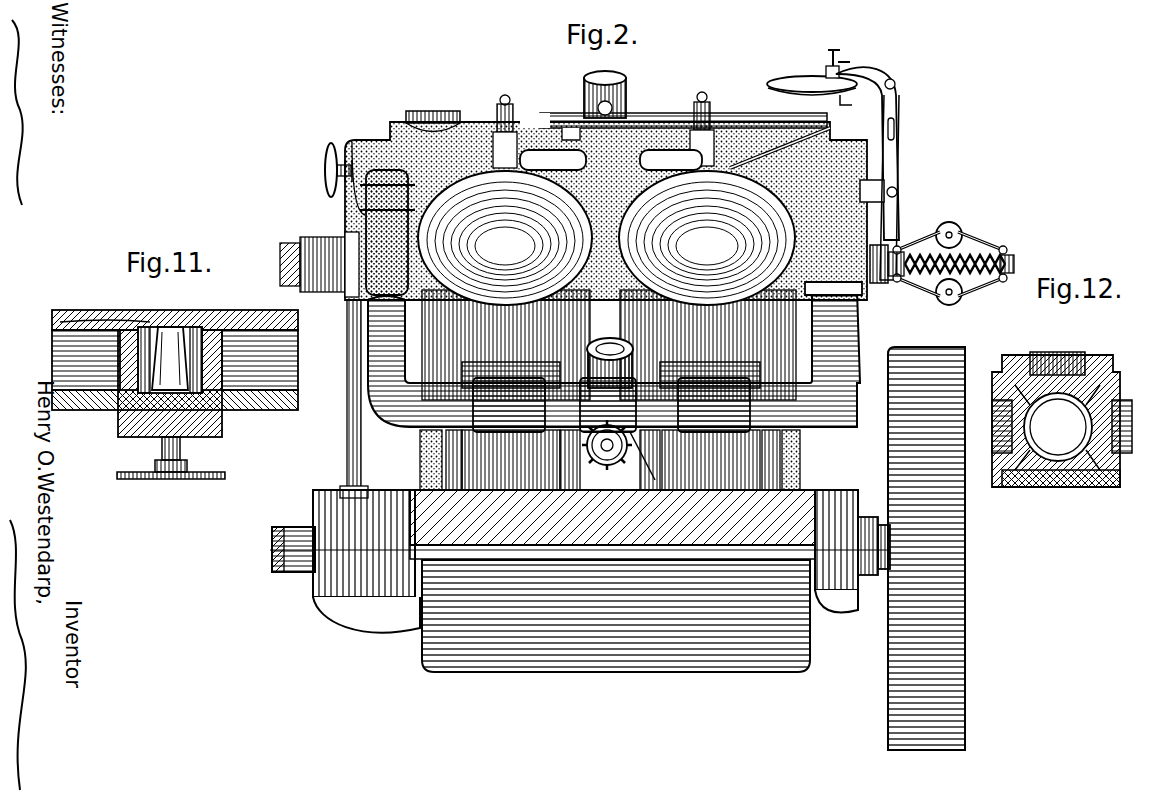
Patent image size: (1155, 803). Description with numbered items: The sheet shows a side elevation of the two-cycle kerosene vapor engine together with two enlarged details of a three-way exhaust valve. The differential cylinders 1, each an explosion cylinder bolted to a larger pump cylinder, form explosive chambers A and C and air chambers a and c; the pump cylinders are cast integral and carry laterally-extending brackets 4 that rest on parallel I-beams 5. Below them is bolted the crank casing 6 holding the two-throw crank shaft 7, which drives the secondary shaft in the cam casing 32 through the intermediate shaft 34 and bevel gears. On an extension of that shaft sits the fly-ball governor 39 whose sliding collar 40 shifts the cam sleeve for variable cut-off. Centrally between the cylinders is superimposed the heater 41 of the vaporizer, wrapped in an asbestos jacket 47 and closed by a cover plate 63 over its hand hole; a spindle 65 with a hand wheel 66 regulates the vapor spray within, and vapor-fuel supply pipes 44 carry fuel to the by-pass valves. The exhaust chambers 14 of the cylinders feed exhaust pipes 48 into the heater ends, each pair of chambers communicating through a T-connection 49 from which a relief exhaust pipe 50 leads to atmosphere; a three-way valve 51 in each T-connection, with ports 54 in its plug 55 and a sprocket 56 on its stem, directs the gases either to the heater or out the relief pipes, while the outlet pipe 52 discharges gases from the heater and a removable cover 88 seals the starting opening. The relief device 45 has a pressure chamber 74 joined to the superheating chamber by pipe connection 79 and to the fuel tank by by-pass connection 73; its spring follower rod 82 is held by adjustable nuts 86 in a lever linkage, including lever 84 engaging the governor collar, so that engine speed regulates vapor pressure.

In FIG. 2, the cylinders 1 is at (606, 238).
In FIG. 2, the laterally-extending brackets 4 is at (512, 470).
In FIG. 2, the I-beams 5 is at (528, 556).
In FIG. 2, the crank casing 6 is at (622, 668).
In FIG. 2, the crank shaft 7 is at (296, 574).
In FIG. 2, the exhaust chamber 14 is at (478, 368).
In FIG. 2, the cam casing 32 is at (300, 240).
In FIG. 2, the intermediate shaft 34 is at (347, 430).
In FIG. 2, the fly-ball governor 39 is at (962, 235).
In FIG. 2, the sliding collar 40 is at (885, 275).
In FIG. 2, the heater 41 is at (474, 124).
In FIG. 2, the vapor-fuel supply pipes 44 is at (675, 149).
In FIG. 2, the relief device 45 is at (803, 75).
In FIG. 2, the heat non-conducting jacket 47 is at (538, 120).
In FIG. 2, the exhaust pipes 48 is at (375, 377).
In FIG. 11, the exhaust pipes 48 is at (54, 356).
In FIG. 12, the exhaust pipes 48 is at (992, 405).
In FIG. 2, the T-connection 49 is at (655, 460).
In FIG. 11, the T-connection 49 is at (118, 420).
In FIG. 12, the T-connection 49 is at (1096, 487).
In FIG. 2, the relief exhaust pipe 50 is at (622, 340).
In FIG. 12, the relief exhaust pipe 50 is at (1056, 360).
In FIG. 11, the three-way valve 51 is at (178, 326).
In FIG. 12, the three-way valve 51 is at (1057, 427).
In FIG. 2, the outlet pipe 52 is at (610, 80).
In FIG. 11, the ports 54 is at (170, 358).
In FIG. 12, the ports 54 is at (1056, 415).
In FIG. 11, the plug 55 is at (132, 318).
In FIG. 12, the plug 55 is at (1045, 480).
In FIG. 2, the sprocket 56 is at (608, 468).
In FIG. 11, the sprocket 56 is at (176, 480).
In FIG. 2, the cover plate 63 is at (428, 118).
In FIG. 2, the spindle 65 is at (345, 185).
In FIG. 2, the hand wheel 66 is at (325, 180).
In FIG. 2, the by-pass connection 73 is at (690, 132).
In FIG. 2, the pressure chamber 74 is at (845, 98).
In FIG. 2, the pipe connection 79 is at (742, 112).
In FIG. 2, the rod 82 is at (832, 50).
In FIG. 2, the lever 84 is at (900, 168).
In FIG. 2, the adjustable nuts 86 is at (844, 60).
In FIG. 2, the removable cover 88 is at (898, 100).
In FIG. 2, the explosive chamber A is at (786, 337).
In FIG. 2, the explosive chamber C is at (437, 322).
In FIG. 2, the air chamber a is at (829, 459).
In FIG. 2, the air chamber c is at (415, 456).